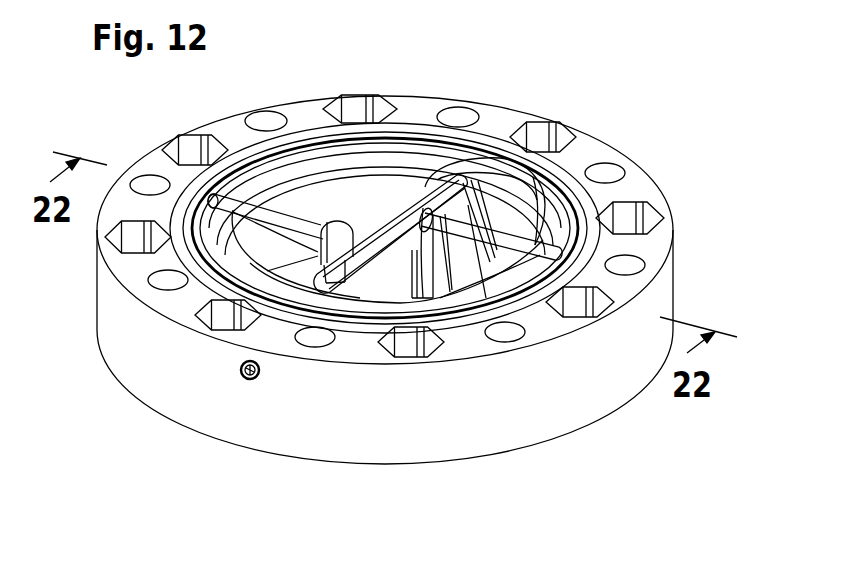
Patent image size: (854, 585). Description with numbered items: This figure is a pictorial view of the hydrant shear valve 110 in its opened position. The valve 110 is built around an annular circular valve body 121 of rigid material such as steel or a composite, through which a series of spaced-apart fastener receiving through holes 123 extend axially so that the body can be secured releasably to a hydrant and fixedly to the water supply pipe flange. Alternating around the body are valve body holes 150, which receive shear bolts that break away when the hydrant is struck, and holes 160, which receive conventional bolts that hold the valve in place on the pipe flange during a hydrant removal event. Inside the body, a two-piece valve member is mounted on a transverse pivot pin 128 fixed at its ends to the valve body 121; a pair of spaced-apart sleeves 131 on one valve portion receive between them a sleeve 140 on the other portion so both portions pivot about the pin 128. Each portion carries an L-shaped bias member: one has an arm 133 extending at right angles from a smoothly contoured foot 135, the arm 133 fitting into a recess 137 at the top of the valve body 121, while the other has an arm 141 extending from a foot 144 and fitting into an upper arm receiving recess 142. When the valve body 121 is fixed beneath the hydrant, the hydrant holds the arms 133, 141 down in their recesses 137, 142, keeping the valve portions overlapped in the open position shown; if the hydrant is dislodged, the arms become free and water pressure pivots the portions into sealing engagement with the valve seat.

The hydrant shear valve 110 is at (229, 449).
The valve body 121 is at (160, 355).
The fastener receiving through holes 123 is at (515, 97).
The pivot pin 128 is at (254, 380).
The sleeves 131 is at (506, 240).
The arm 133 is at (530, 200).
The foot 135 is at (477, 275).
The recess 137 is at (287, 150).
The sleeve 140 is at (383, 232).
The arm 141 is at (287, 201).
The arm receiving recess 142 is at (655, 252).
The foot 144 is at (340, 221).
The valve body hole 150 is at (150, 180).
The hole 160 is at (590, 320).